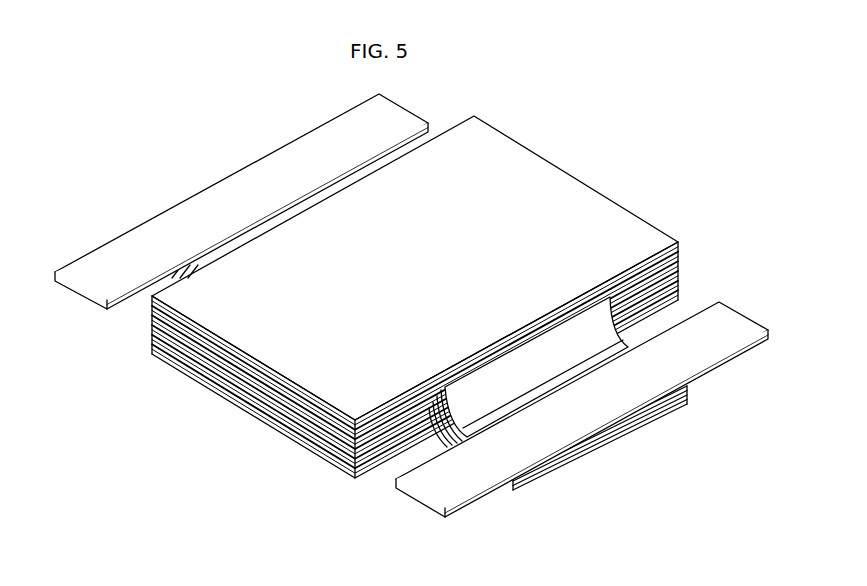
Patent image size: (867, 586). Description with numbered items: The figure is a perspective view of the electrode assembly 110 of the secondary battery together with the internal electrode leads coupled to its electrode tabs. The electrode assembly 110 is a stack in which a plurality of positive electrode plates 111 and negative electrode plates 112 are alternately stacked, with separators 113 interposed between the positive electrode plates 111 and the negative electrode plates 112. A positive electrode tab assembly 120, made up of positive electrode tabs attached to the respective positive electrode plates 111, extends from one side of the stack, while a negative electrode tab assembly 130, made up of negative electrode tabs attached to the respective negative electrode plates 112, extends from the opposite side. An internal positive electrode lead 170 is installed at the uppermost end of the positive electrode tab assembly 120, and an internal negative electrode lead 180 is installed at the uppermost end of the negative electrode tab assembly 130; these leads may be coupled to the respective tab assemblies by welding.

The electrode assembly 110 is at (598, 168).
The positive electrode plate 111 is at (152, 303).
The negative electrode plate 112 is at (154, 353).
The separator 113 is at (152, 327).
The positive electrode tab assembly 120 is at (515, 395).
The negative electrode tab assembly 130 is at (270, 220).
The internal positive electrode lead 170 is at (477, 478).
The internal negative electrode lead 180 is at (98, 257).